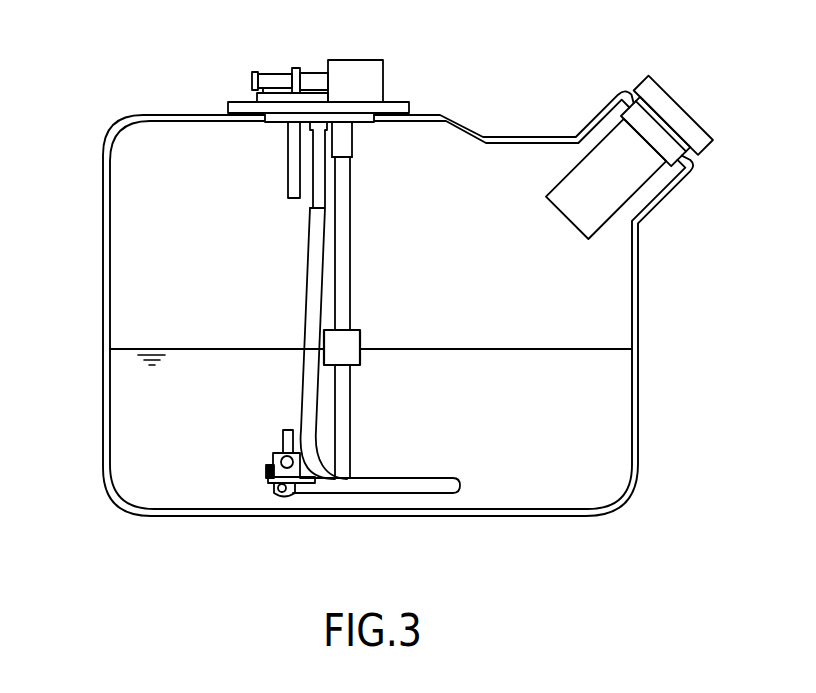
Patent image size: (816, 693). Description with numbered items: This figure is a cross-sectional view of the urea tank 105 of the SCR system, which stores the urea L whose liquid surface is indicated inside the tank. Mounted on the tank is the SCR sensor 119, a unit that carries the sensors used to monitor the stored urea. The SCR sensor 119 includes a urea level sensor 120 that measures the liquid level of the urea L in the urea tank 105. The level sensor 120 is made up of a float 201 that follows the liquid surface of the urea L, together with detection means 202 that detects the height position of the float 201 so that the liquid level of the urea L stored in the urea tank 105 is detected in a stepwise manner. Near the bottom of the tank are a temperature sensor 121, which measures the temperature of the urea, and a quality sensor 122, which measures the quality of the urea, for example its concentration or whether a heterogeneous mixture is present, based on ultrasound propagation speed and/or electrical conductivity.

The urea tank 105 is at (116, 131).
The SCR sensor 119 is at (390, 60).
The urea level sensor 120 is at (362, 178).
The detection means 202 is at (352, 256).
The float 201 is at (362, 330).
The temperature sensor 121 is at (282, 499).
The quality sensor 122 is at (414, 494).
The urea L is at (120, 418).